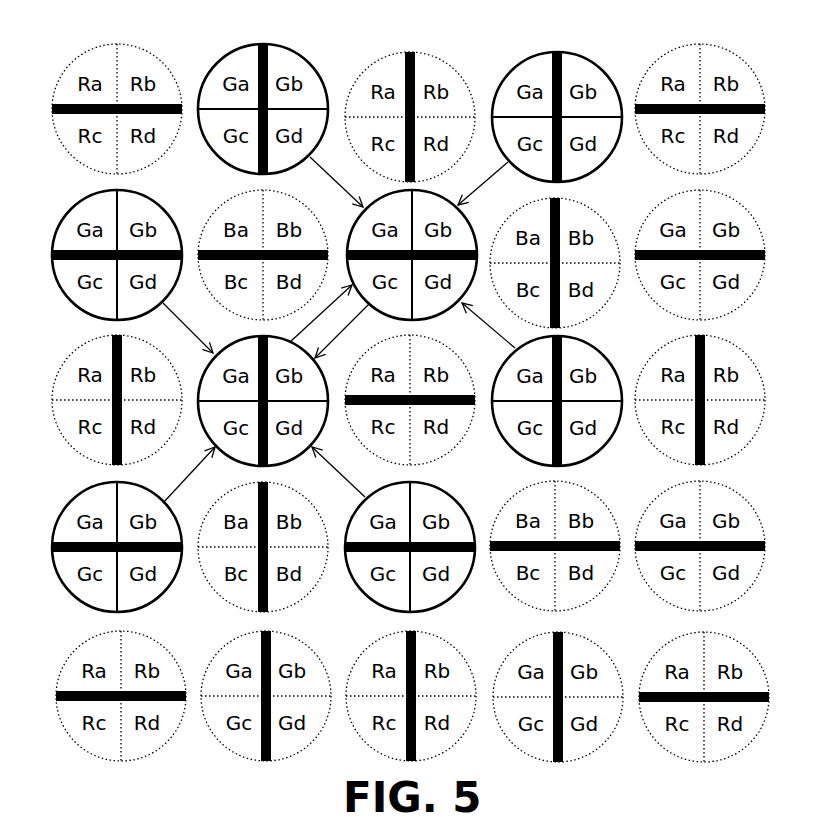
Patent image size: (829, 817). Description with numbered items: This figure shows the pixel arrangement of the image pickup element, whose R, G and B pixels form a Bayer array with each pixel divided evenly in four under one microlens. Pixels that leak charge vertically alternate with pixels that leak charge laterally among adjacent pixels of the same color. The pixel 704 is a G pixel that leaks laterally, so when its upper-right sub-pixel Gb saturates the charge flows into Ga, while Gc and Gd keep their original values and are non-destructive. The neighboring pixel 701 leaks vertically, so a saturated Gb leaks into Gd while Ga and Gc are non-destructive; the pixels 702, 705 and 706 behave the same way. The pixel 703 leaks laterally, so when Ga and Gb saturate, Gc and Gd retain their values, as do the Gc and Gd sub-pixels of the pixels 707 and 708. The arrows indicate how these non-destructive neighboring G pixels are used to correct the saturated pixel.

The pixel 701 is at (232, 51).
The pixel 702 is at (512, 71).
The pixel 703 is at (70, 208).
The pixel 704 is at (354, 225).
The pixel 705 is at (227, 346).
The pixel 706 is at (600, 353).
The pixel 707 is at (74, 499).
The pixel 708 is at (447, 603).